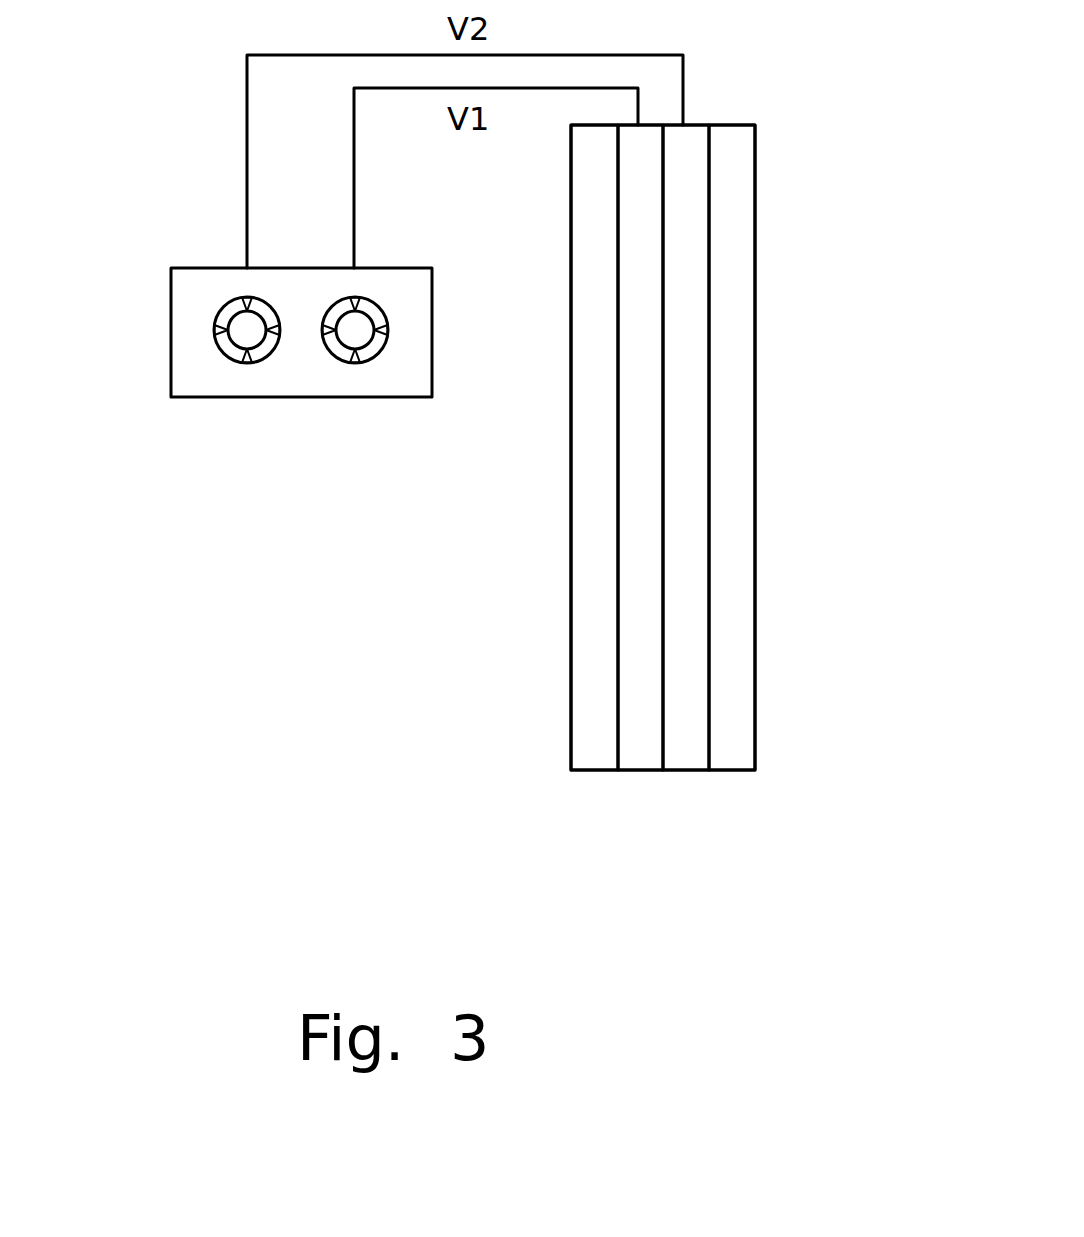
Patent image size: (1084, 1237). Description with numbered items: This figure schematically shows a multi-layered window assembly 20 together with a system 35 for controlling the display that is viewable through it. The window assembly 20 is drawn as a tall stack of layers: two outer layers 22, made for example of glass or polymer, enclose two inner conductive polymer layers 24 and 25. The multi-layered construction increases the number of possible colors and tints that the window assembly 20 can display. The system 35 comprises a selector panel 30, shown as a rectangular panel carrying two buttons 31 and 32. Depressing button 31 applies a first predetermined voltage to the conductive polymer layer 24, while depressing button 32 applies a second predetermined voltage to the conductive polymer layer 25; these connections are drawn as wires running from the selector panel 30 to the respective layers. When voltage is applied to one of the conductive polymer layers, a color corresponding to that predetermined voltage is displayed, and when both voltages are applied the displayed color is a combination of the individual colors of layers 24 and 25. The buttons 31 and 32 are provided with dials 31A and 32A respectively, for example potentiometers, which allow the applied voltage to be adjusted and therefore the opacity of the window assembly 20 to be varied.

The window assembly 20 is at (850, 207).
The outer layers 22 is at (600, 762).
The conductive polymer layer 24 is at (645, 755).
The conductive polymer layer 25 is at (689, 762).
The selector panel 30 is at (203, 383).
The button 31 is at (360, 324).
The dial 31A is at (373, 357).
The button 32 is at (245, 330).
The dial 32A is at (235, 360).
The system 35 is at (189, 228).